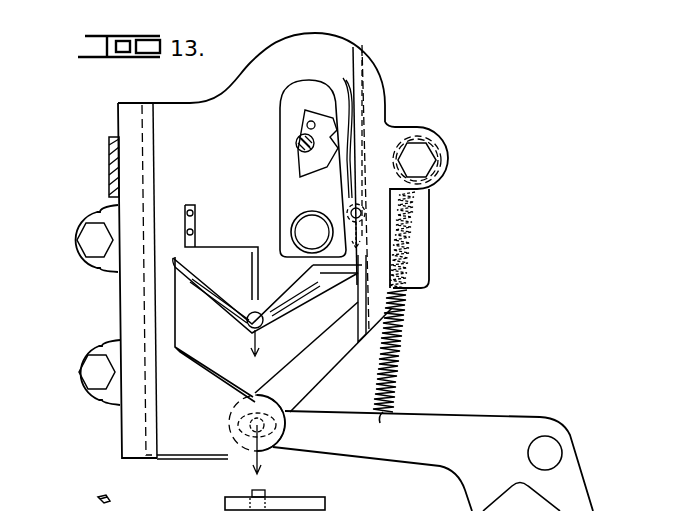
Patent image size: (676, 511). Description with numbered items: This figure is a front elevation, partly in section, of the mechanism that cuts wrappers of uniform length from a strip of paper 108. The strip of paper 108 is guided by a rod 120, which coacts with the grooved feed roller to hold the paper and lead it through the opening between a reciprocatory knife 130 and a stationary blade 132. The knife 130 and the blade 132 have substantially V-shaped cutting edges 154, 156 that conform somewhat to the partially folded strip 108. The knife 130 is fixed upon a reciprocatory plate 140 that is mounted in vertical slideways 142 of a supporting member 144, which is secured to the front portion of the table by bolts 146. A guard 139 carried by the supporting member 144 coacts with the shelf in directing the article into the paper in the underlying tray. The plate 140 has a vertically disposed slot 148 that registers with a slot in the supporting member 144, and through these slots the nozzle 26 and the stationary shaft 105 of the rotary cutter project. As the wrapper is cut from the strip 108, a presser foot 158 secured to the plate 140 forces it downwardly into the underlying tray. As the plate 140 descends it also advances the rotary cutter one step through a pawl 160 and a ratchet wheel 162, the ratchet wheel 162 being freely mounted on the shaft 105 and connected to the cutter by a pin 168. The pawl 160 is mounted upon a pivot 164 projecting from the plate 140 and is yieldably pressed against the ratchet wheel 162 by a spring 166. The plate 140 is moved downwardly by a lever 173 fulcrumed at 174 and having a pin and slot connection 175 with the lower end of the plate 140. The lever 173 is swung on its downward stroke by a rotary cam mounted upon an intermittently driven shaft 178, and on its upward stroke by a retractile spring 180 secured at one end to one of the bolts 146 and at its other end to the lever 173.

The nozzle 26 is at (291, 231).
The stationary shaft 105 is at (298, 143).
The strip of paper 108 is at (210, 303).
The rod 120 is at (252, 330).
The reciprocatory knife 130 is at (207, 278).
The stationary blade 132 is at (190, 312).
The guard 139 is at (110, 166).
The reciprocatory plate 140 is at (170, 424).
The vertical slideways 142 is at (127, 113).
The supporting member 144 is at (329, 372).
The bolts 146 is at (88, 239).
The slot 148 is at (286, 190).
The V-shaped cutting edge 154 is at (273, 313).
The V-shaped cutting edge 156 is at (317, 305).
The presser foot 158 is at (254, 274).
The pawl 160 is at (363, 108).
The ratchet wheel 162 is at (298, 165).
The pivot 164 is at (350, 212).
The spring 166 is at (348, 195).
The pin 168 is at (306, 124).
The lever 173 is at (468, 425).
The fulcrum 174 is at (528, 453).
The pin and slot connection 175 is at (249, 434).
The shaft 178 is at (526, 497).
The retractile spring 180 is at (395, 354).